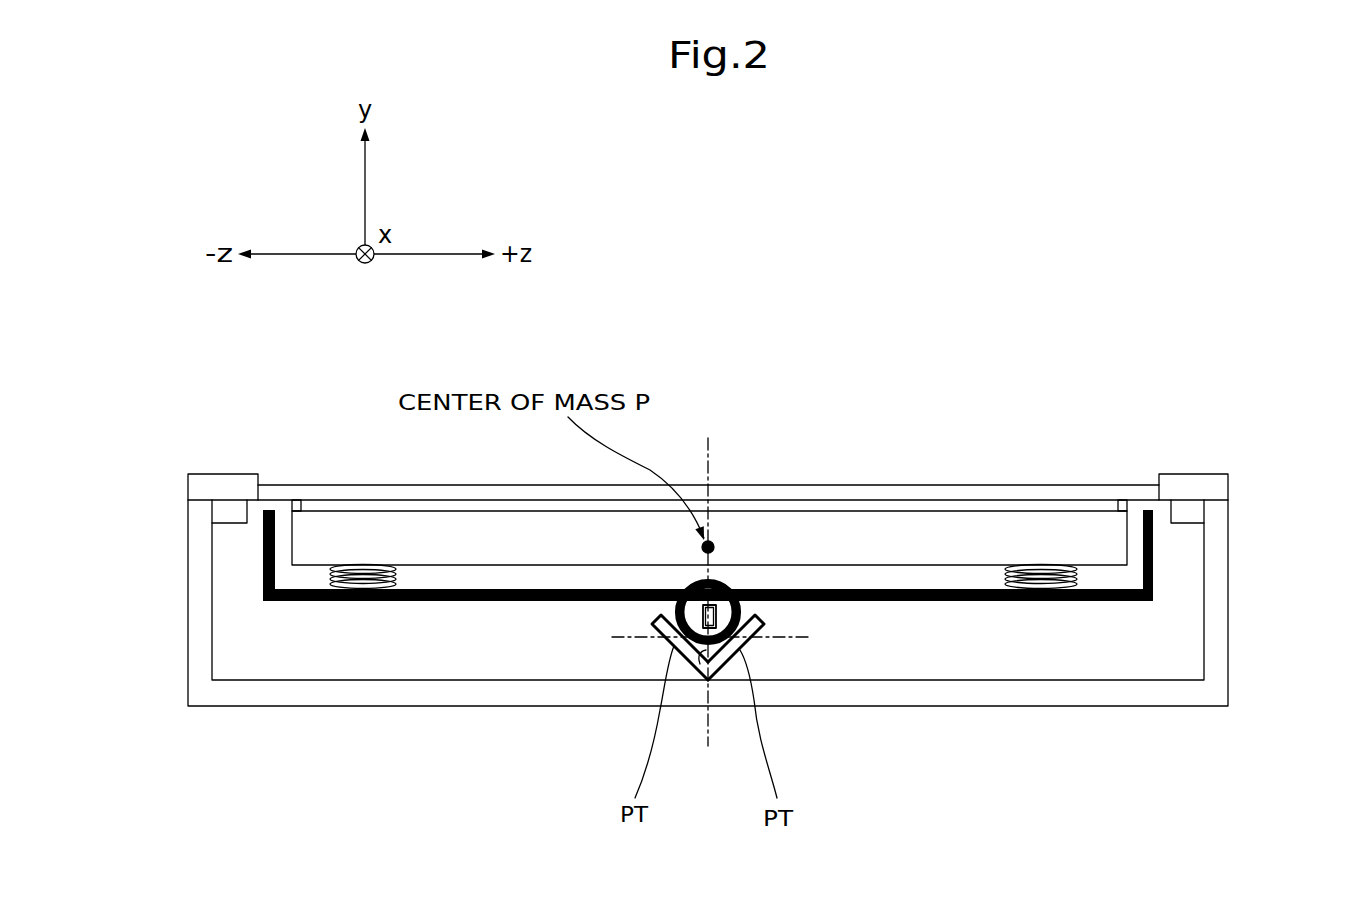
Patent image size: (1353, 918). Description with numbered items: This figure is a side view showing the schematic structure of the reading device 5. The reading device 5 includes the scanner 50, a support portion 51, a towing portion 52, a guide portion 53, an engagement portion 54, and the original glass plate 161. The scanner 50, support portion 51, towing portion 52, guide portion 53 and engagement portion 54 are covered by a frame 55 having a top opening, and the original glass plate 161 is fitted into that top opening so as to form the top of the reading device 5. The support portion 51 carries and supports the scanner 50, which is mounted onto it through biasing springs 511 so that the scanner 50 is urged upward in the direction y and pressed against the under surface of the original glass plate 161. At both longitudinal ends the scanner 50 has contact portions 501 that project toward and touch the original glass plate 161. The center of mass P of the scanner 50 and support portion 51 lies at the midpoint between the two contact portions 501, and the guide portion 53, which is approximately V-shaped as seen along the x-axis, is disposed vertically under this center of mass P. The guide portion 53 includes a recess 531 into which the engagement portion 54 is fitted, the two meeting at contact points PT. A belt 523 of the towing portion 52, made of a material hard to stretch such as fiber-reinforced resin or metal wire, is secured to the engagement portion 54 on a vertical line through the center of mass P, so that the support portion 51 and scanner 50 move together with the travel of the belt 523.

The reading device 5 is at (1260, 513).
The frame 55 is at (186, 558).
The original glass plate 161 is at (356, 482).
The scanner 50 is at (871, 527).
The contact portions 501 is at (297, 507).
The support portion 51 is at (541, 606).
The biasing springs 511 is at (328, 576).
The towing portion 52 is at (724, 618).
The belt 523 is at (677, 606).
The guide portion 53 is at (666, 650).
The engagement portion 54 is at (727, 662).
The recess 531 is at (700, 665).